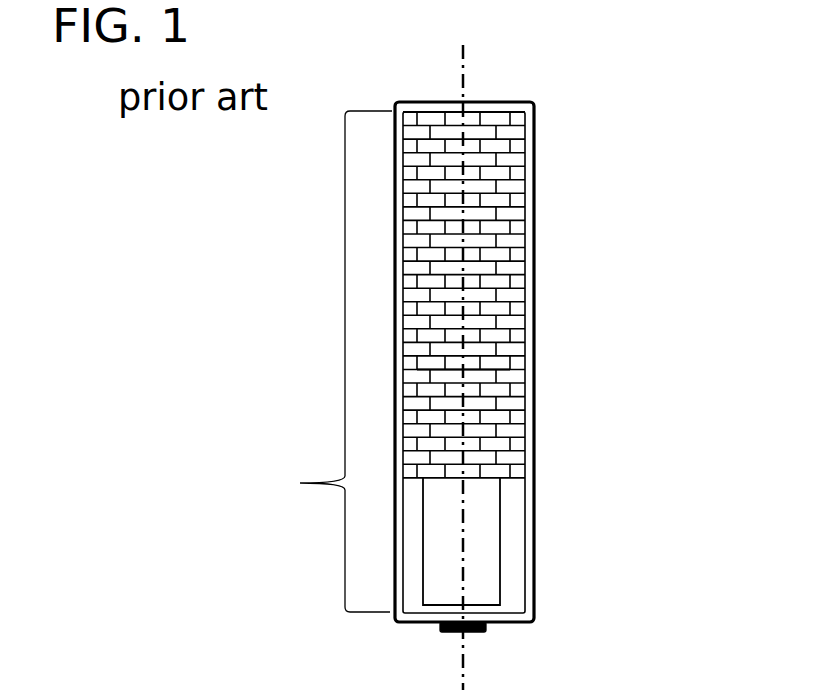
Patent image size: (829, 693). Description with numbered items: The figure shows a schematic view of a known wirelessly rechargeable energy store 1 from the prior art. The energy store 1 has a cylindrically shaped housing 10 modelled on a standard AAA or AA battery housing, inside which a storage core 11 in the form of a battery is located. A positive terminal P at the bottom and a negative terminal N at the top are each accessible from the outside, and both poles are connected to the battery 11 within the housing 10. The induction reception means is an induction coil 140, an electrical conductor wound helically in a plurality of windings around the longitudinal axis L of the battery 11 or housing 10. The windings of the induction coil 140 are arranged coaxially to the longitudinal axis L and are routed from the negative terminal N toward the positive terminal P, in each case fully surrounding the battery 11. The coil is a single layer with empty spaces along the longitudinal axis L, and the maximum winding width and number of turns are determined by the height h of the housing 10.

The wirelessly rechargeable energy store 1 is at (548, 106).
The housing 10 is at (545, 213).
The negative terminal N is at (475, 100).
The induction coil 140 is at (473, 247).
The storage core 11 is at (483, 377).
The longitudinal axis L is at (465, 515).
The positive terminal P is at (474, 632).
The height h is at (332, 361).